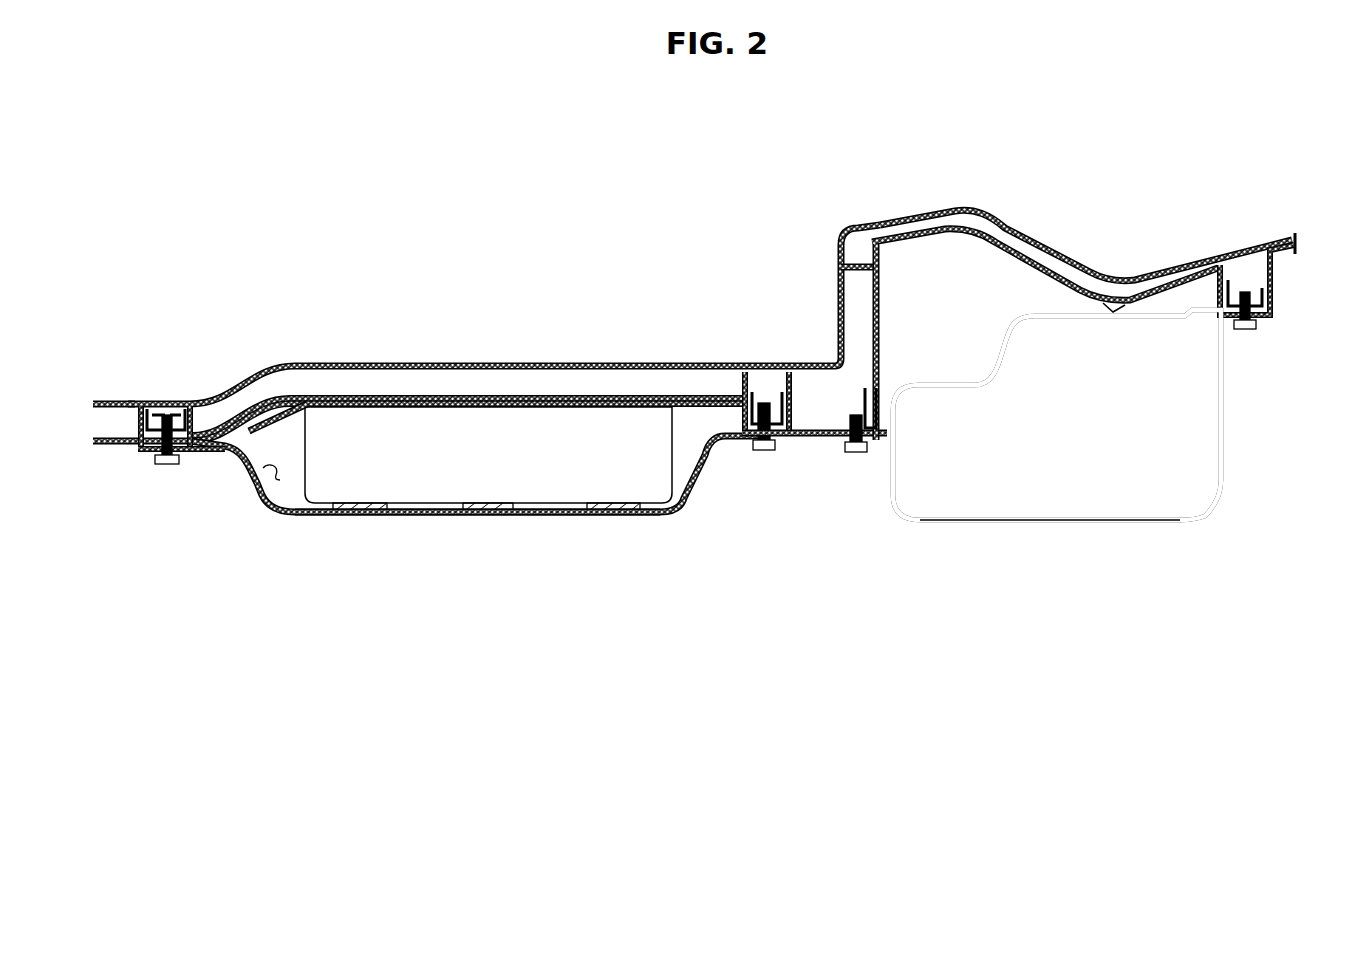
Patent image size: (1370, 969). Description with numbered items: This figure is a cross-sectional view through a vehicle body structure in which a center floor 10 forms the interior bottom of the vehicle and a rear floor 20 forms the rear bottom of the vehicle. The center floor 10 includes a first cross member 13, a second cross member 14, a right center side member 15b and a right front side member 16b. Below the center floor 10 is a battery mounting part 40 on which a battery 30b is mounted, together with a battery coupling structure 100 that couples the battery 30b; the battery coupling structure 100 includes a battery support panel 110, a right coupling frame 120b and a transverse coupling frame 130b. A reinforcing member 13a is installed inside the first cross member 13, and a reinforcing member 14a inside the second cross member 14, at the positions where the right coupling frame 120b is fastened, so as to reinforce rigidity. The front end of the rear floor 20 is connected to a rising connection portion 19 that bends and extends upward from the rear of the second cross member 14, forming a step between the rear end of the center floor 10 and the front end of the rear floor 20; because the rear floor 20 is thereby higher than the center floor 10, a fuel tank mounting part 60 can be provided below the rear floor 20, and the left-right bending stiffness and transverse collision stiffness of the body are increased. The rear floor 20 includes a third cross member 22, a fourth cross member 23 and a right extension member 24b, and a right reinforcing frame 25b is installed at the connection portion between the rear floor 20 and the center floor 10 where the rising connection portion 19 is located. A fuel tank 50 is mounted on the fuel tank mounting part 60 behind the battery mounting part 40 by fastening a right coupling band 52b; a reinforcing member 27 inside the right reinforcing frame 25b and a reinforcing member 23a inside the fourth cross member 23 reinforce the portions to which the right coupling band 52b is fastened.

The center floor 10 is at (477, 360).
The battery support panel 110 is at (382, 398).
The battery coupling structure 100 is at (352, 530).
The right coupling frame 120b is at (415, 520).
The transverse coupling frame 130b is at (488, 514).
The battery 30b is at (548, 472).
The battery mounting part 40 is at (272, 470).
The first cross member 13 is at (200, 402).
The reinforcing member 13a is at (162, 418).
The right front side member 16b is at (95, 410).
The right center side member 15b is at (737, 388).
The reinforcing member 14a is at (757, 396).
The second cross member 14 is at (791, 398).
The right reinforcing frame 25b is at (820, 442).
The rising connection portion 19 is at (838, 285).
The third cross member 22 is at (858, 232).
The rear floor 20 is at (1074, 268).
The fuel tank mounting part 60 is at (994, 284).
The reinforcing member 27 is at (868, 386).
The right extension member 24b is at (1117, 308).
The fourth cross member 23 is at (1278, 268).
The reinforcing member 23a is at (1237, 290).
The fuel tank 50 is at (1083, 478).
The right coupling band 52b is at (1005, 522).